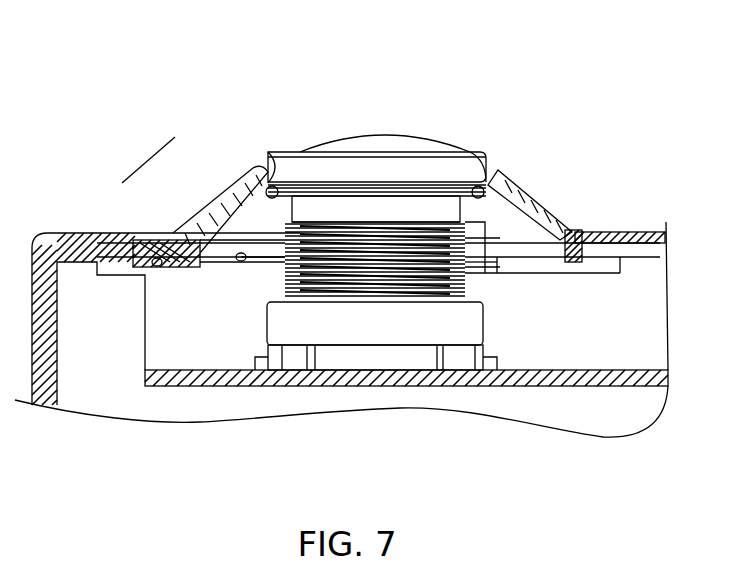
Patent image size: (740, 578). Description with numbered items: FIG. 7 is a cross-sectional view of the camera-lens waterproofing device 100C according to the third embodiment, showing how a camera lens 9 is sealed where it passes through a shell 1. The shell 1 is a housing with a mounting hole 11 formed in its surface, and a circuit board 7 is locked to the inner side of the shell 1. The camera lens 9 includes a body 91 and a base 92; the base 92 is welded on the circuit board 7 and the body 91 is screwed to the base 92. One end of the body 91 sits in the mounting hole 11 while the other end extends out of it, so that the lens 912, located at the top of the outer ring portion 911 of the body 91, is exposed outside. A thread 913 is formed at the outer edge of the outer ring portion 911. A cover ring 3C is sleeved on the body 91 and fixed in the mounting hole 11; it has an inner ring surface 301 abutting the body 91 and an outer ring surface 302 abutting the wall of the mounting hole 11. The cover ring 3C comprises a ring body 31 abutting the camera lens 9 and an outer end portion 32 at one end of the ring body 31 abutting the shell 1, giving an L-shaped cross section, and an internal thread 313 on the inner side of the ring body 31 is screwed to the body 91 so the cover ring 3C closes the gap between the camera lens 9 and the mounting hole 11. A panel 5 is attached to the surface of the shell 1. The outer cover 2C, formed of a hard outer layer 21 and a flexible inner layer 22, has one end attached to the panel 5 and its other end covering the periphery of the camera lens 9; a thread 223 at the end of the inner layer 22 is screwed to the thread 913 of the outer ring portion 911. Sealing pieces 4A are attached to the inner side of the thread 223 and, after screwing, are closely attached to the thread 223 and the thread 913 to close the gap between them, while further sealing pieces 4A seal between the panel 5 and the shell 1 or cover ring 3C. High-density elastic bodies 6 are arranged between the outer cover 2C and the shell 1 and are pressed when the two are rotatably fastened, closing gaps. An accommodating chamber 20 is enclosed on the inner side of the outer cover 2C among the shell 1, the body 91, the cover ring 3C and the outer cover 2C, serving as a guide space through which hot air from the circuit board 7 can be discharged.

The camera-lens waterproofing device 100C is at (405, 28).
The camera lens 9 is at (377, 126).
The outer ring portion 911 is at (350, 168).
The lens 912 is at (403, 140).
The thread 913 is at (464, 182).
The sealing pieces 4A is at (271, 197).
The thread 223 is at (272, 167).
The outer cover 2C is at (146, 157).
The outer layer 21 is at (240, 190).
The inner layer 22 is at (213, 222).
The elastic bodies 6 is at (157, 243).
The accommodating chamber 20 is at (485, 223).
The outer end portion 32 is at (507, 257).
The panel 5 is at (638, 237).
The shell 1 is at (640, 258).
The mounting hole 11 is at (522, 276).
The outer ring surface 302 is at (247, 258).
The ring body 31 is at (279, 256).
The inner ring surface 301 is at (321, 250).
The body 91 is at (362, 212).
The base 92 is at (403, 325).
The internal thread 313 is at (440, 232).
The cover ring 3C is at (478, 245).
The circuit board 7 is at (597, 380).